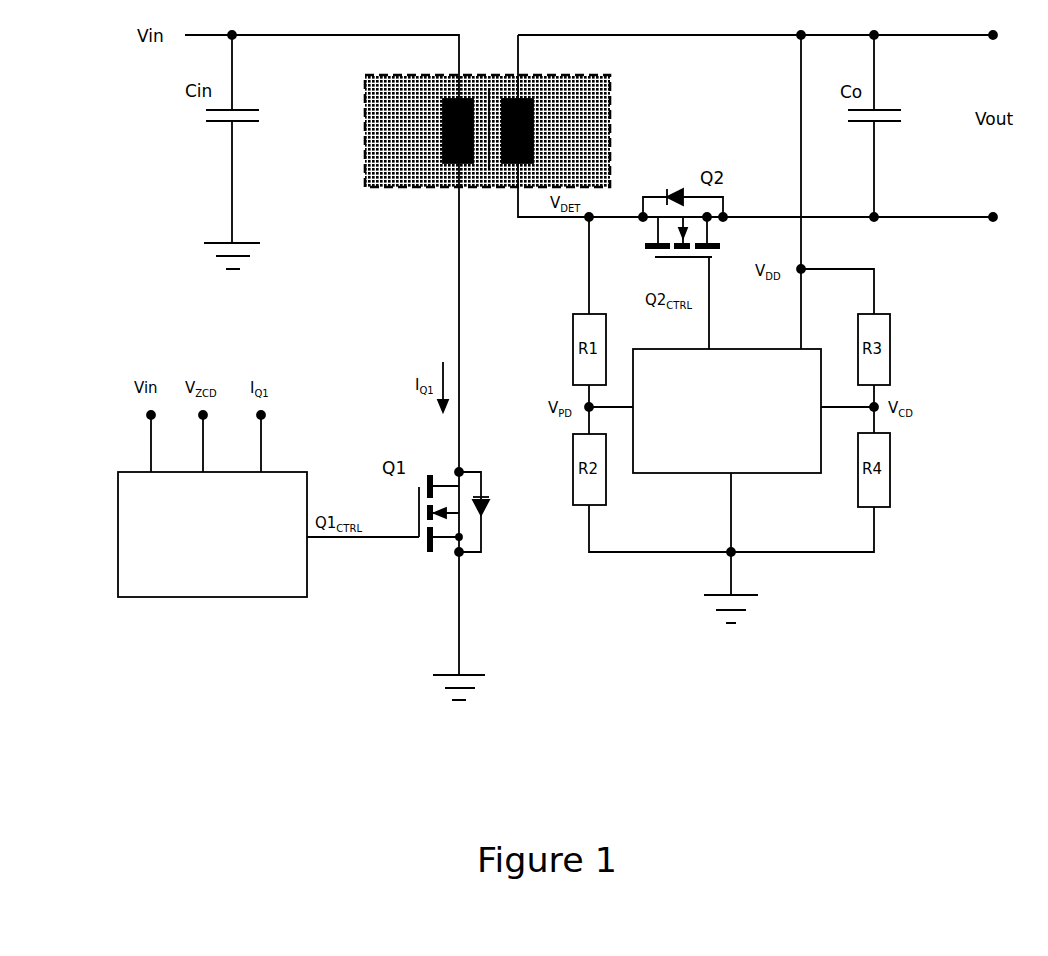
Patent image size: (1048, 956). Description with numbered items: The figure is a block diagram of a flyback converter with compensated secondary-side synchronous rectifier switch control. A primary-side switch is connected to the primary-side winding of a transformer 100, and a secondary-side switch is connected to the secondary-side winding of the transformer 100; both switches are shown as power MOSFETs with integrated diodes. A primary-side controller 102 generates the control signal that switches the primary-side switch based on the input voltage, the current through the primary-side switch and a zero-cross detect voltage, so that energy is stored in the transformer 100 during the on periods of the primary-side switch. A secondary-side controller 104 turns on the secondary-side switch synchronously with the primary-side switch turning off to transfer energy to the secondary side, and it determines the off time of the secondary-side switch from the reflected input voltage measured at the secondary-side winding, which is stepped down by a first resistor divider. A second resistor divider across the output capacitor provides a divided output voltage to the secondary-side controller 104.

The transformer 100 is at (487, 131).
The primary-side controller 102 is at (212, 534).
The secondary-side controller 104 is at (727, 411).